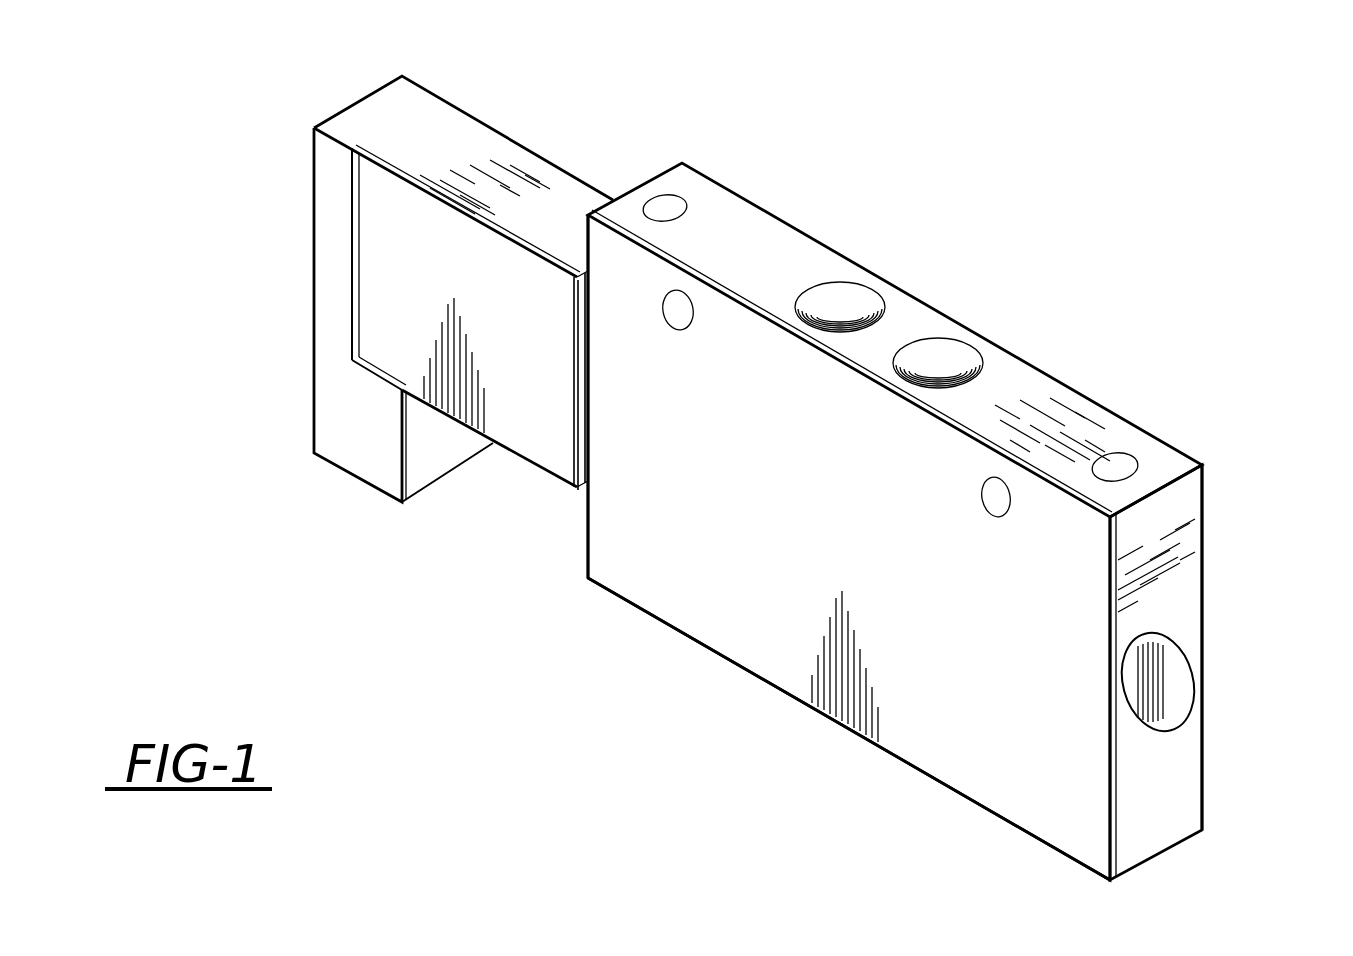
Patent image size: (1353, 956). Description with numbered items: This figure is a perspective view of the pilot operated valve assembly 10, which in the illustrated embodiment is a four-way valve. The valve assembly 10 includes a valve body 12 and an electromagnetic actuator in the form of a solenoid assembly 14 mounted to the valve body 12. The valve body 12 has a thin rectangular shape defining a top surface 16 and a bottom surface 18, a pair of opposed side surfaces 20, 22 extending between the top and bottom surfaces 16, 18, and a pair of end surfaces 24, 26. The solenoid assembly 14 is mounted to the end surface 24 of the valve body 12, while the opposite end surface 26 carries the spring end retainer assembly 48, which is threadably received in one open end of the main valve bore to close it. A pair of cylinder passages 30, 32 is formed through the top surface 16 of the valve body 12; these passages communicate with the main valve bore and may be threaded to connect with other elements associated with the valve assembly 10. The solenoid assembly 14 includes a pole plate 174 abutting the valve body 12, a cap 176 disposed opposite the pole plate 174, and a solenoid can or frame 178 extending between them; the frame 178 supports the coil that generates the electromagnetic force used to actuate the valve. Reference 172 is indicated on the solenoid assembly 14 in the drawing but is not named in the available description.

The pilot operated valve assembly 10 is at (1060, 154).
The valve body 12 is at (1062, 362).
The solenoid assembly 14 is at (506, 124).
The top surface 16 is at (758, 244).
The bottom surface 18 is at (672, 636).
The side surface 20 is at (960, 758).
The side surface 22 is at (1205, 490).
The end surface 24 is at (588, 557).
The end surface 26 is at (1178, 786).
The cylinder passage 30 is at (846, 292).
The cylinder passage 32 is at (942, 352).
The spring end retainer assembly 48 is at (1182, 668).
The top surface of clamp member 172 is at (551, 210).
The pole plate 174 is at (582, 347).
The cap 176 is at (335, 222).
The solenoid can or frame 178 is at (543, 442).